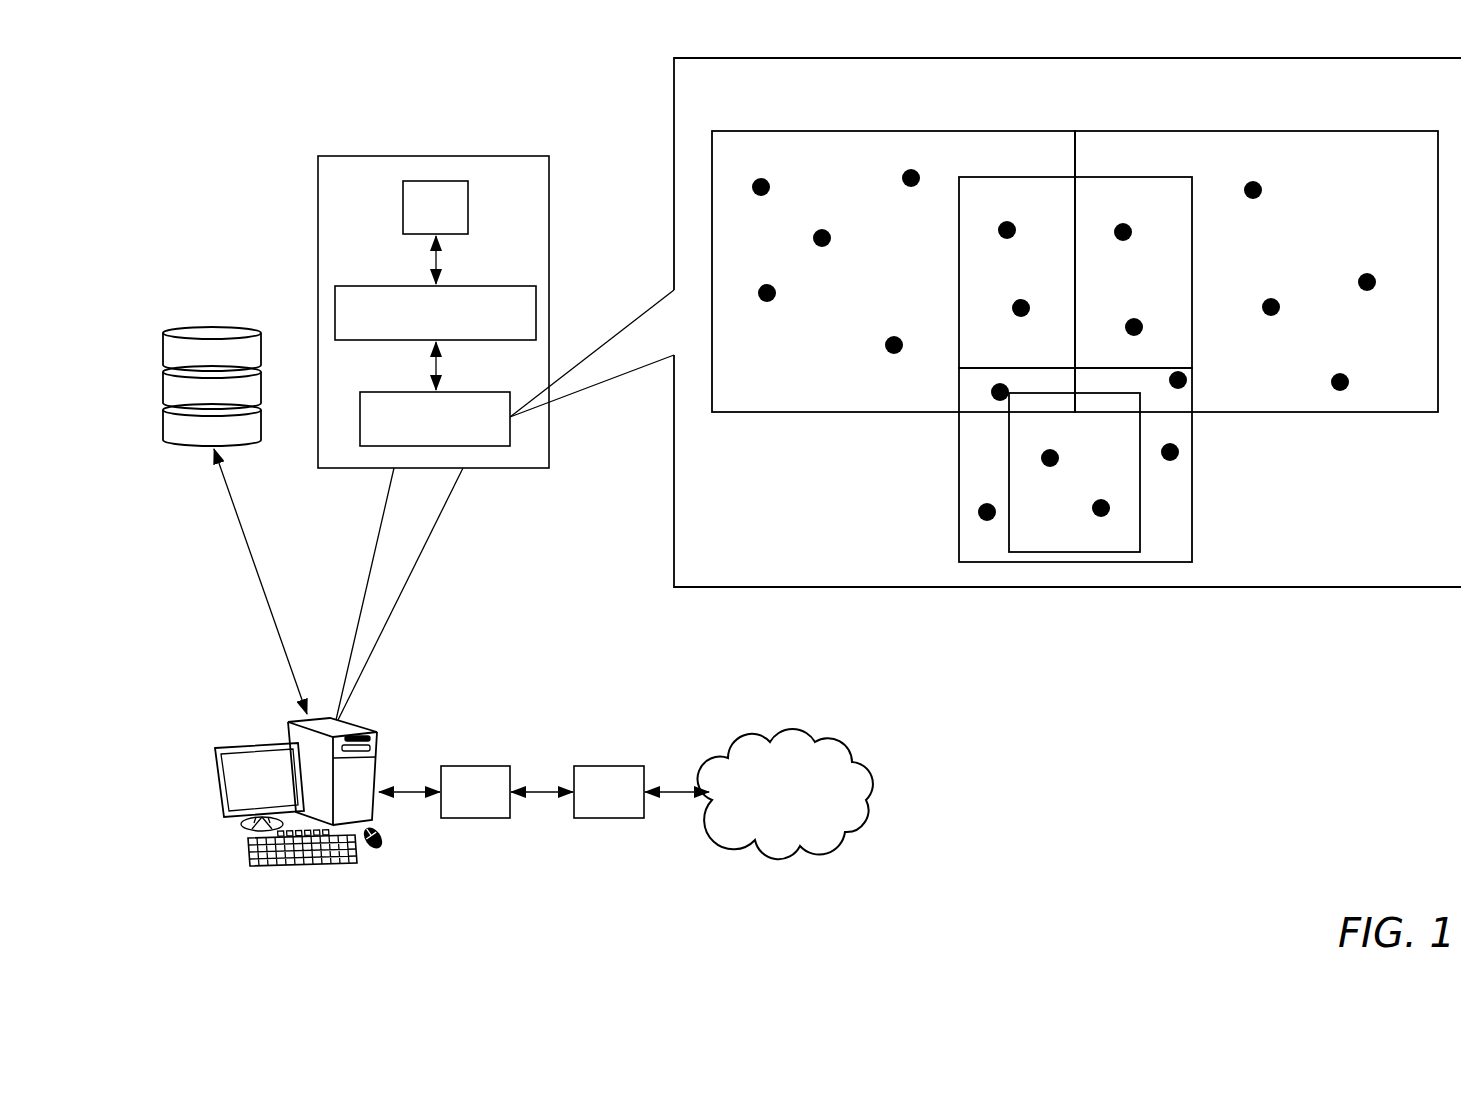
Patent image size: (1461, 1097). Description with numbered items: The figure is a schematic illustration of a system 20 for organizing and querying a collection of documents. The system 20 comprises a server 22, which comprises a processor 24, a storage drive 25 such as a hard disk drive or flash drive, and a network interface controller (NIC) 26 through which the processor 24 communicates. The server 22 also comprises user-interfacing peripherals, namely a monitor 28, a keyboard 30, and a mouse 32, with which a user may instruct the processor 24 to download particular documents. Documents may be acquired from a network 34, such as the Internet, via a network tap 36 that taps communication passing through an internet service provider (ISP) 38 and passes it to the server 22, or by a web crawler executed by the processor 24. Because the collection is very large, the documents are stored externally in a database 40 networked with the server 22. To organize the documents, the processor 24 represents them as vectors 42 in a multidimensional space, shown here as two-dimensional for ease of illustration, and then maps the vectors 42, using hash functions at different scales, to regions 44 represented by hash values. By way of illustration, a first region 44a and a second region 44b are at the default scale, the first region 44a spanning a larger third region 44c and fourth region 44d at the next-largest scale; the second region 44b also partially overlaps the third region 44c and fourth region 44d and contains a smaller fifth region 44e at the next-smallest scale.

The system 20 is at (182, 120).
The server 22 is at (375, 733).
The processor 24 is at (335, 312).
The storage drive 25 is at (487, 446).
The network interface controller (NIC) 26 is at (468, 207).
The monitor 28 is at (242, 748).
The keyboard 30 is at (330, 866).
The mouse 32 is at (380, 851).
The network 34 is at (785, 738).
The network tap 36 is at (476, 766).
The internet service provider (ISP) 38 is at (609, 766).
The database 40 is at (163, 418).
The vectors 42 is at (771, 186).
The regions 44 is at (1232, 570).
The first region 44a is at (1162, 177).
The second region 44b is at (959, 470).
The third region 44c is at (856, 131).
The fourth region 44d is at (1282, 131).
The fifth region 44e is at (1140, 486).